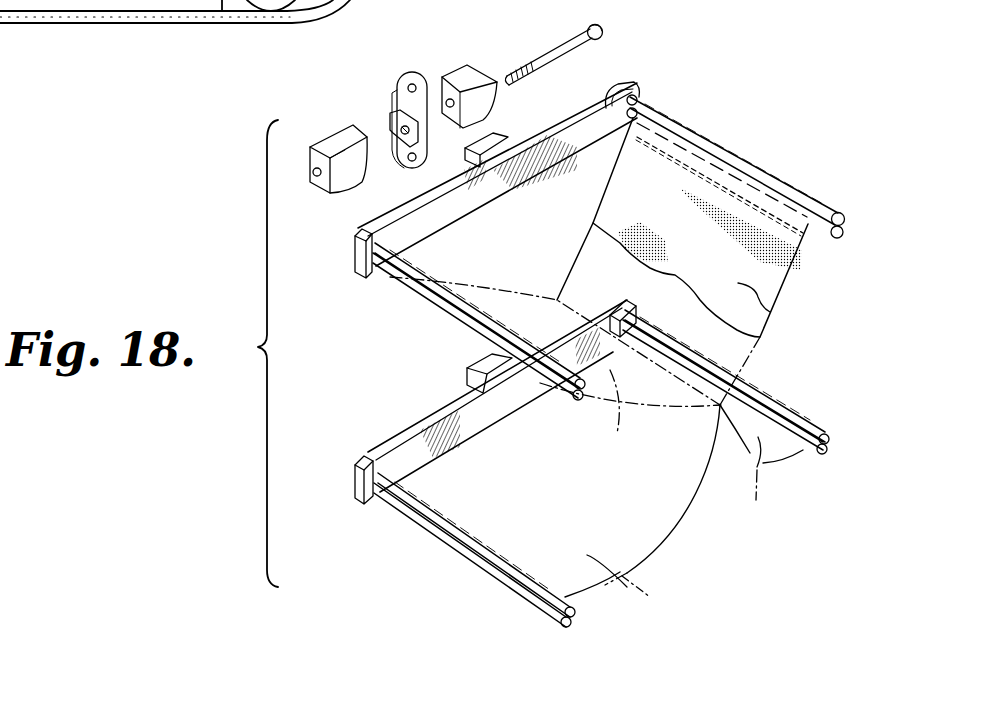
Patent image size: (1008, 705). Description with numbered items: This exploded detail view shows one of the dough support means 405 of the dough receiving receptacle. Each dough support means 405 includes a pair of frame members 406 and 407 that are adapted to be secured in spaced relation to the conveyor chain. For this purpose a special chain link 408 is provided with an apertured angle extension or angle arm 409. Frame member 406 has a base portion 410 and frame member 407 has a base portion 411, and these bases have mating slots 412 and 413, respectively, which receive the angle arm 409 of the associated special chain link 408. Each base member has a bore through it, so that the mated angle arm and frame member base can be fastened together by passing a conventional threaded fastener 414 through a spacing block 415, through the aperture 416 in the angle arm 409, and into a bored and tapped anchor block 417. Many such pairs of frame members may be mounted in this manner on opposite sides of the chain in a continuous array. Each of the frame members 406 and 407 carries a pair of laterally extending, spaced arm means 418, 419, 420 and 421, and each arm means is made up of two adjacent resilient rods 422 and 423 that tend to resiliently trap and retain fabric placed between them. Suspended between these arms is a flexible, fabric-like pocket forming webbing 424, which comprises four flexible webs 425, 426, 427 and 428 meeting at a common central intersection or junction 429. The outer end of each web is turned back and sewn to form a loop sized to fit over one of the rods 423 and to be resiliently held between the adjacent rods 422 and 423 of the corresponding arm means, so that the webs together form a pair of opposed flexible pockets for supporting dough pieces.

The dough support means 405 is at (720, 129).
The frame member 406 is at (605, 104).
The frame member 407 is at (401, 457).
The special chain link 408 is at (405, 75).
The angle arm 409 is at (390, 117).
The base portion 410 is at (497, 143).
The base portion 411 is at (487, 367).
The mating slot 412 is at (473, 167).
The mating slot 413 is at (465, 381).
The threaded fastener 414 is at (563, 40).
The spacing block 415 is at (463, 70).
The aperture 416 is at (401, 134).
The anchor block 417 is at (335, 135).
The arm means 418 is at (401, 300).
The arm means 419 is at (690, 110).
The arm means 420 is at (519, 606).
The arm means 421 is at (761, 386).
The resilient rod 422 is at (828, 213).
The resilient rod 423 is at (791, 268).
The pocket forming webbing 424 is at (775, 334).
The flexible web 425 is at (770, 312).
The flexible web 426 is at (555, 372).
The flexible web 427 is at (642, 510).
The flexible web 428 is at (761, 467).
The central junction 429 is at (720, 405).